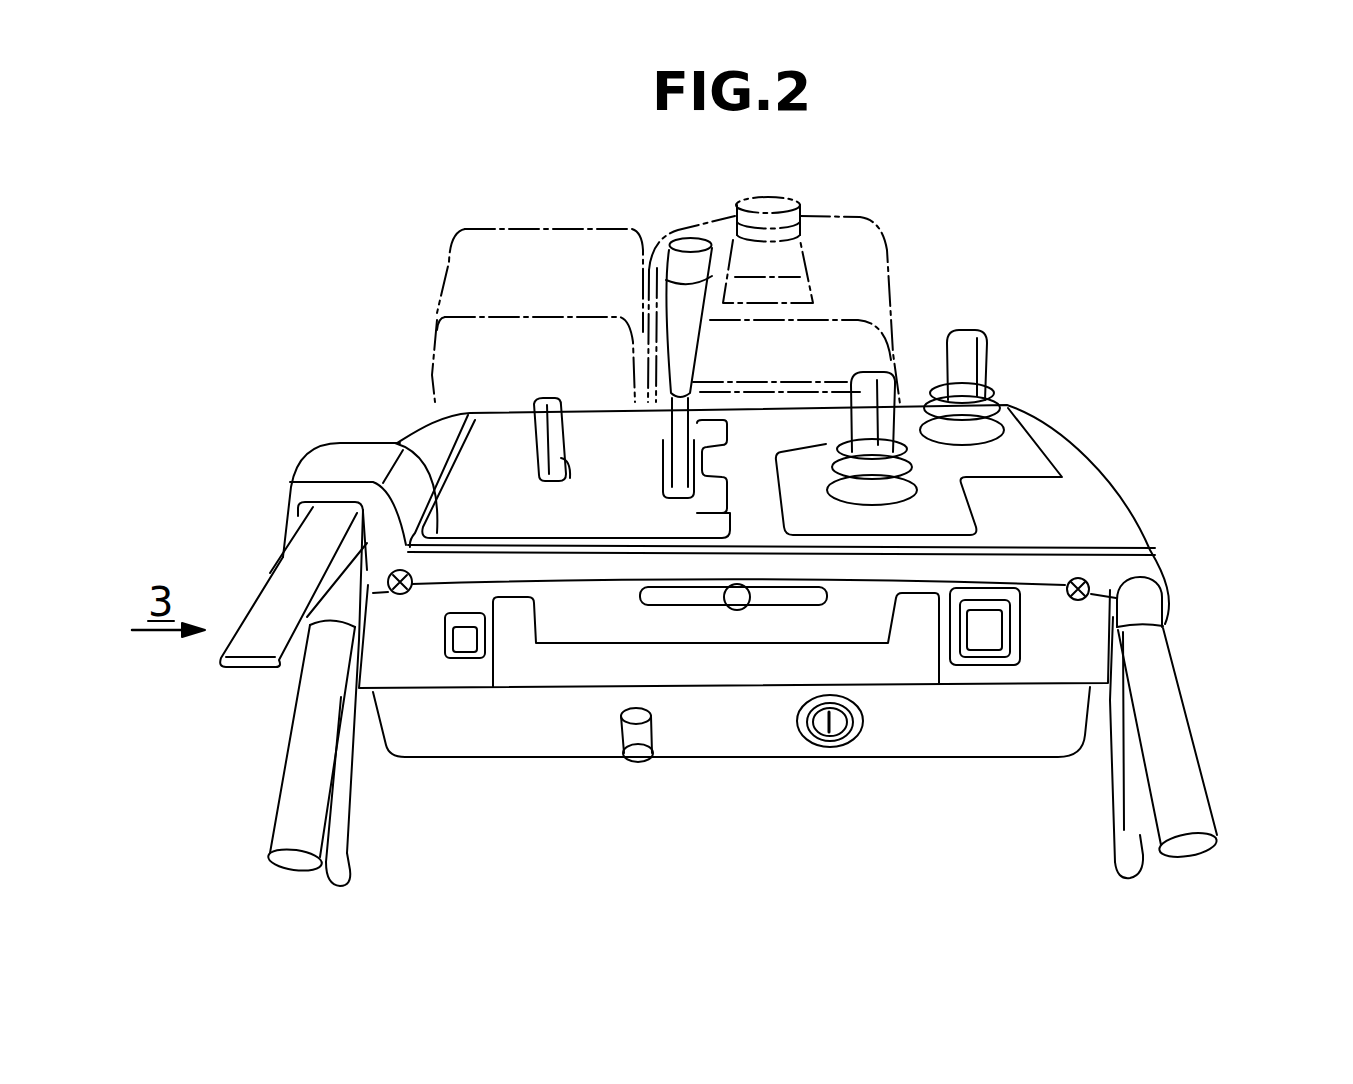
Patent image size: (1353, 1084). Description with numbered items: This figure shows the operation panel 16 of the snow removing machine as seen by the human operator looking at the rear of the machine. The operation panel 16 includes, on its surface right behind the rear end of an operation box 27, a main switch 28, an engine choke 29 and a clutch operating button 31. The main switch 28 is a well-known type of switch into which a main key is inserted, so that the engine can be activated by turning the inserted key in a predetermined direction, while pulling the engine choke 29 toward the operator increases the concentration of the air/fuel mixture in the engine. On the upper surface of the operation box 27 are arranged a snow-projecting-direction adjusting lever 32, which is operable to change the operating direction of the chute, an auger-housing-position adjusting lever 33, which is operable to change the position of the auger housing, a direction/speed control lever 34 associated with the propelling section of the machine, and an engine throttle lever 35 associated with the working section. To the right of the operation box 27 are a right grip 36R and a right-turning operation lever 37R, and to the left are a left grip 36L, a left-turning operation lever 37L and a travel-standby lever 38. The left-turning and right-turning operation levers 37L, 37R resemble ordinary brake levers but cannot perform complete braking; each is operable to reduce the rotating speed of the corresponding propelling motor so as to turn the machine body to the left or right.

The operation panel 16 is at (1062, 412).
The operation box 27 is at (1085, 510).
The main switch 28 is at (835, 747).
The engine choke 29 is at (637, 762).
The clutch operating button 31 is at (985, 633).
The snow-projecting-direction adjusting lever 32 is at (967, 343).
The auger-housing-position adjusting lever 33 is at (884, 396).
The direction/speed control lever 34 is at (683, 263).
The engine throttle lever 35 is at (541, 414).
The left grip 36L is at (295, 800).
The right grip 36R is at (1185, 782).
The left-turning operation lever 37L is at (350, 882).
The right-turning operation lever 37R is at (1115, 807).
The travel-standby lever 38 is at (260, 632).